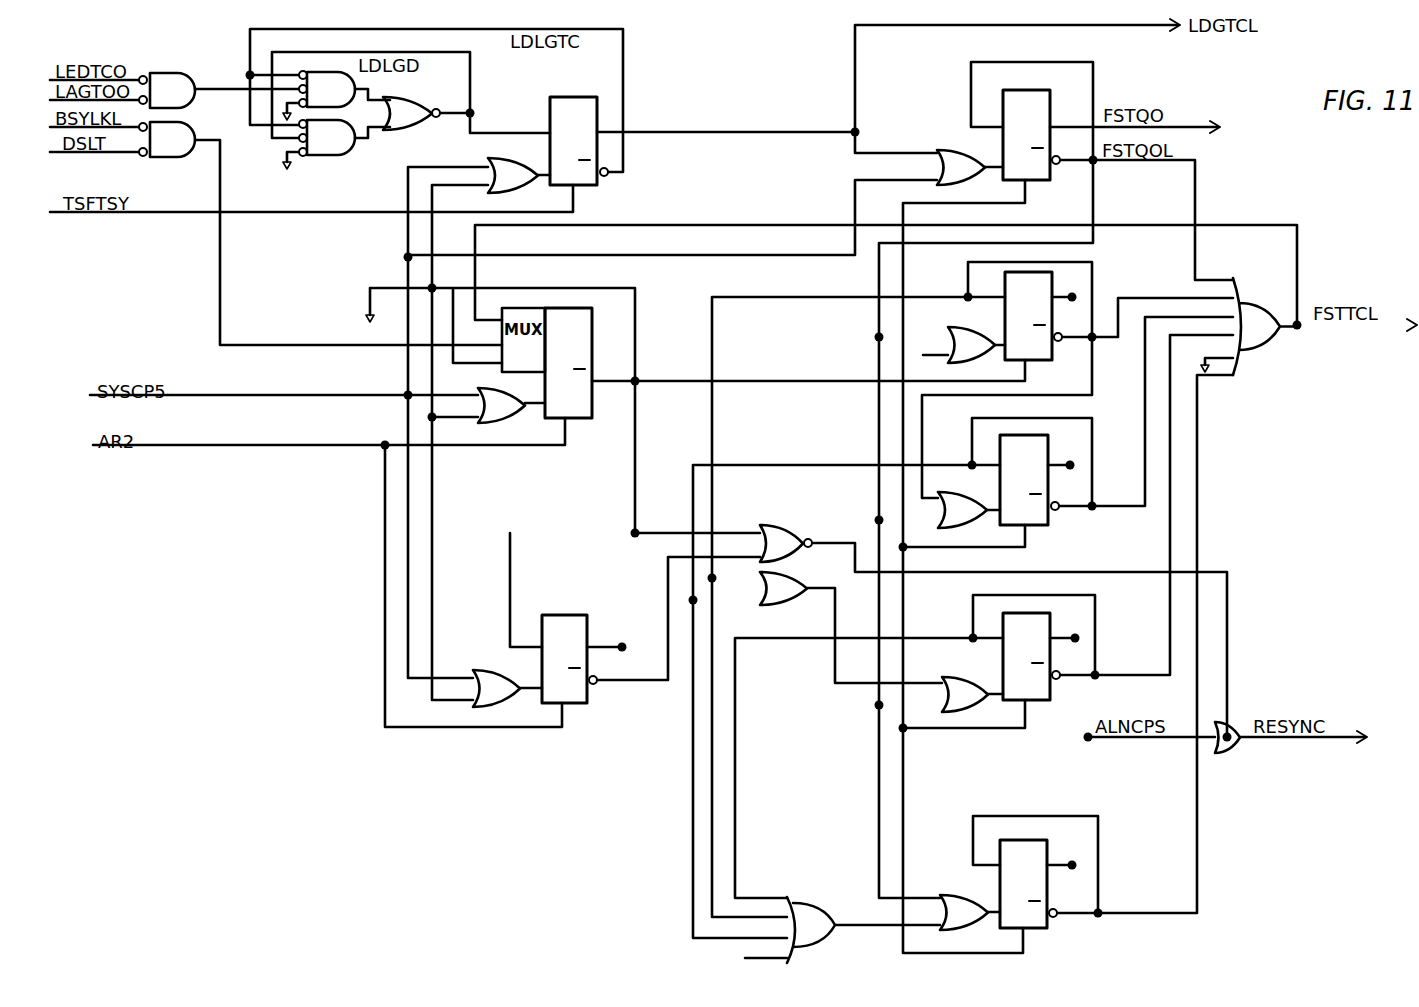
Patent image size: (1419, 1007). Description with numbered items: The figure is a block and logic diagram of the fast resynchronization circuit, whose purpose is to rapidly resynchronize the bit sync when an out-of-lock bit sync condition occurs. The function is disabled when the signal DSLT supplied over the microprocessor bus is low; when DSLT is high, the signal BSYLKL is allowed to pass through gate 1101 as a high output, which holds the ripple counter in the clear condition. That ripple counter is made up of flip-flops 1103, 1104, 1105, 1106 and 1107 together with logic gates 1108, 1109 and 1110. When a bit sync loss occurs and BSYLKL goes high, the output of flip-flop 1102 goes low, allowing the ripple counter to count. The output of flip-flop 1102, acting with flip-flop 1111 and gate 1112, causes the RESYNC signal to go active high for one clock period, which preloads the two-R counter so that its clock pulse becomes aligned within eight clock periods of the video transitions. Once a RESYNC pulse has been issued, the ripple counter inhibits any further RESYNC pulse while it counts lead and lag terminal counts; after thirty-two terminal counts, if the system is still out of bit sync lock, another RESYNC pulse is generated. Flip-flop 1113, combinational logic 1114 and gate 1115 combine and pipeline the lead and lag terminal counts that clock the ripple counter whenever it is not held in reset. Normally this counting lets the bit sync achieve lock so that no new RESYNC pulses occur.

The gate 1101 is at (172, 142).
The flip-flop 1102 is at (173, 77).
The flip-flop 1103 is at (1002, 153).
The flip-flop 1104 is at (1003, 318).
The flip-flop 1105 is at (1048, 525).
The flip-flop 1106 is at (1002, 663).
The flip-flop 1107 is at (1000, 892).
The logic gate 1108 is at (787, 598).
The logic gate 1109 is at (815, 908).
The logic gate 1110 is at (1260, 337).
The flip-flop 1111 is at (565, 613).
The gate 1112 is at (582, 420).
The flip-flop 1113 is at (570, 93).
The combinational logic 1114 is at (368, 143).
The gate 1115 is at (785, 530).